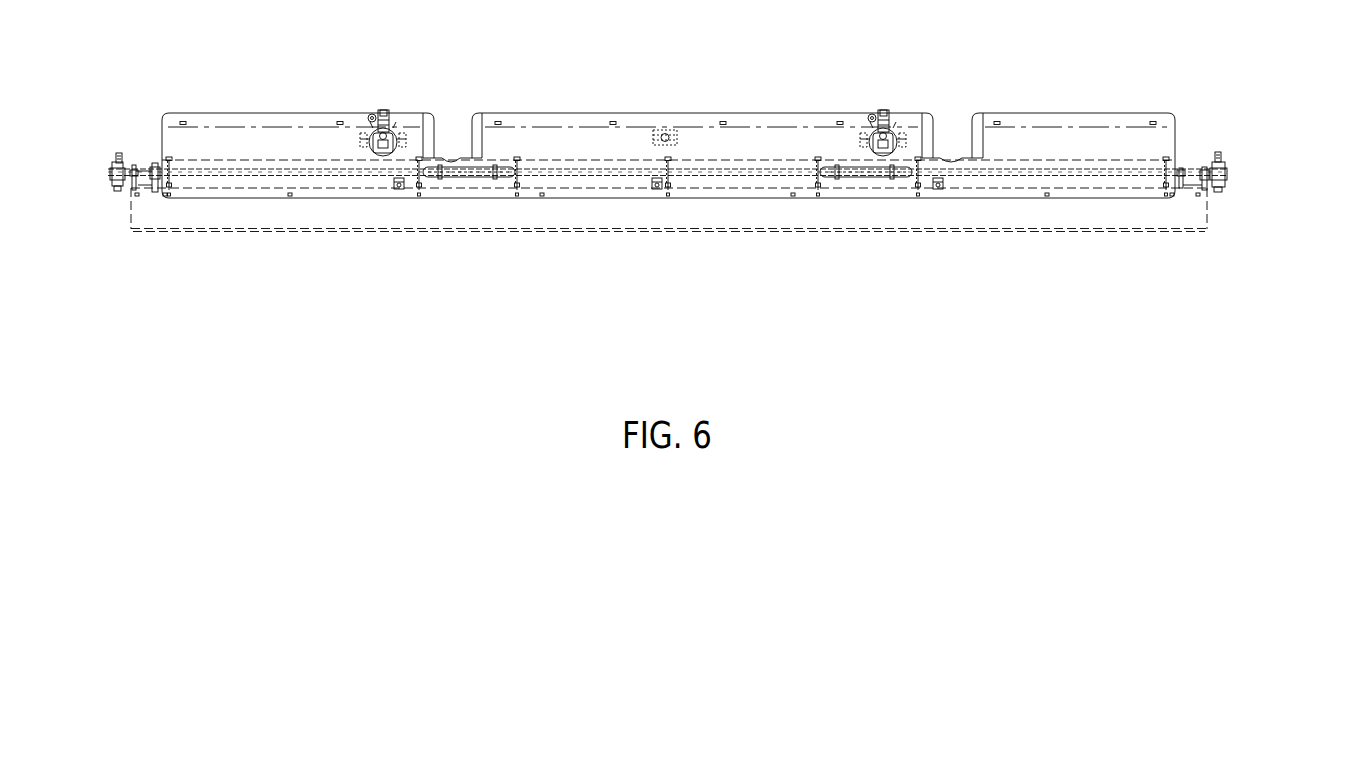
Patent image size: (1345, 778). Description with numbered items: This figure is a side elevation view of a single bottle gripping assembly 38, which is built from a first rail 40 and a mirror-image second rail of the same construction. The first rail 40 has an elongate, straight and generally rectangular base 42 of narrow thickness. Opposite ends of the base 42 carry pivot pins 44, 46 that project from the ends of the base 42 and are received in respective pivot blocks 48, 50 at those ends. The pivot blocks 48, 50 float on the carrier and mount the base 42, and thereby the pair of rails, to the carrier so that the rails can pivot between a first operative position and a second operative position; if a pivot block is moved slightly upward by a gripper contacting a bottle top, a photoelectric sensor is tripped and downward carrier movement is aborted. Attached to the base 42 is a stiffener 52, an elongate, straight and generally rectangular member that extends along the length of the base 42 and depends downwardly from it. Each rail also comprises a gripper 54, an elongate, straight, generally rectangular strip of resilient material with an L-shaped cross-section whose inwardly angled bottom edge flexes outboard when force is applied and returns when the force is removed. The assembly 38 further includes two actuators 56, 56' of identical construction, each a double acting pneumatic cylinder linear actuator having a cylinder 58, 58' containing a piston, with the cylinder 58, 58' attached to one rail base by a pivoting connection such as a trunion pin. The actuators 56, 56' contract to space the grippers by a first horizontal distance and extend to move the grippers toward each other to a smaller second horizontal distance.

The bottle gripping assembly 38 is at (1059, 108).
The first rail 40 is at (628, 108).
The base 42 is at (218, 143).
The pivot pin 44 is at (143, 163).
The pivot pin 46 is at (1195, 163).
The pivot block 48 is at (113, 188).
The pivot block 50 is at (1228, 187).
The stiffener 52 is at (567, 215).
The gripper 54 is at (682, 230).
The actuator 56 is at (339, 197).
The actuator 56' is at (837, 197).
The cylinder 58 is at (414, 96).
The cylinder 58' is at (916, 96).